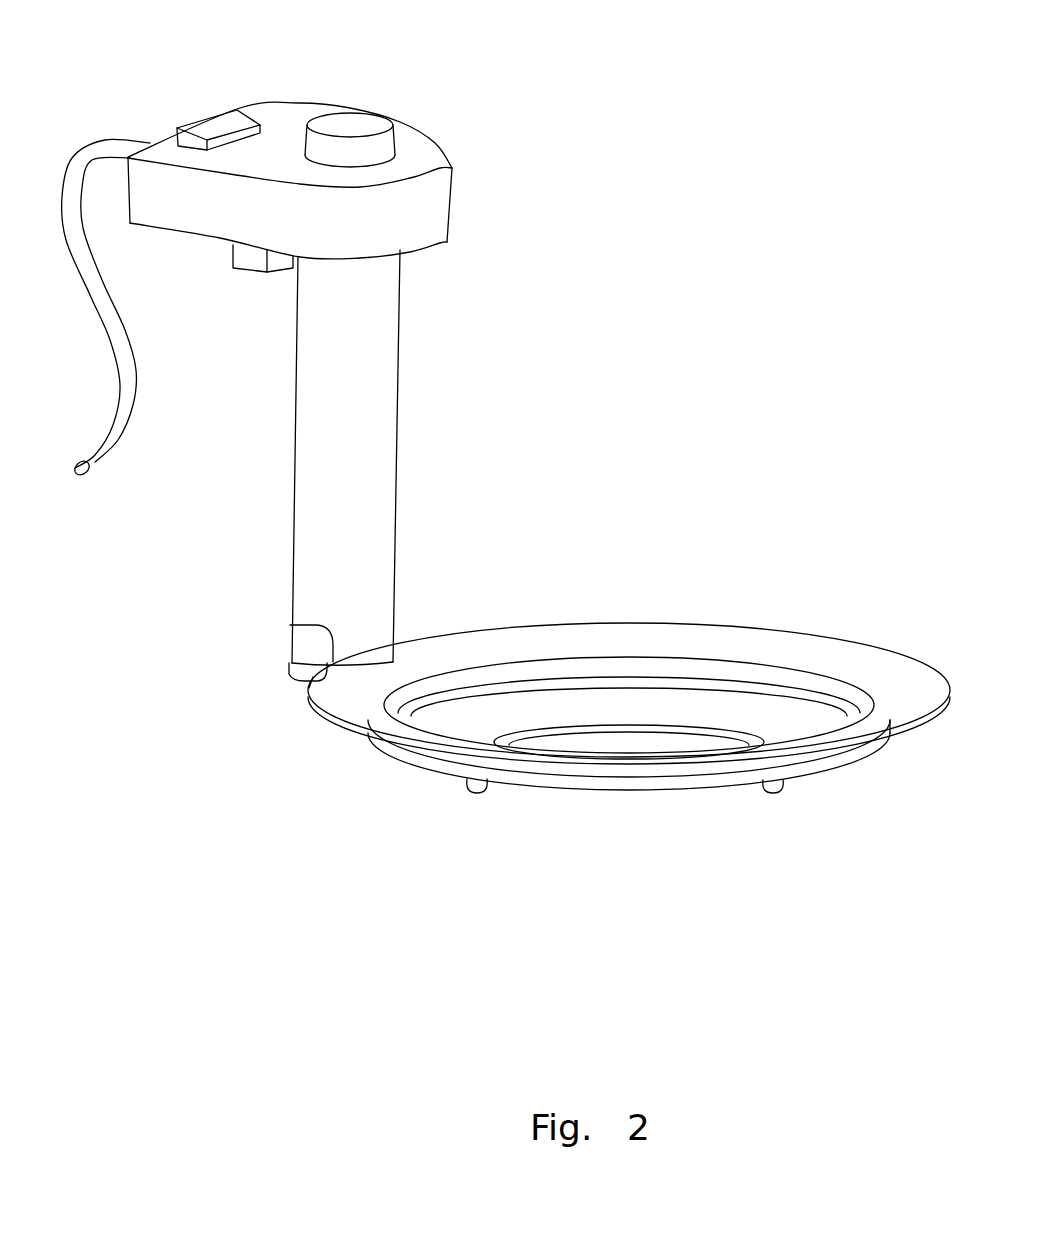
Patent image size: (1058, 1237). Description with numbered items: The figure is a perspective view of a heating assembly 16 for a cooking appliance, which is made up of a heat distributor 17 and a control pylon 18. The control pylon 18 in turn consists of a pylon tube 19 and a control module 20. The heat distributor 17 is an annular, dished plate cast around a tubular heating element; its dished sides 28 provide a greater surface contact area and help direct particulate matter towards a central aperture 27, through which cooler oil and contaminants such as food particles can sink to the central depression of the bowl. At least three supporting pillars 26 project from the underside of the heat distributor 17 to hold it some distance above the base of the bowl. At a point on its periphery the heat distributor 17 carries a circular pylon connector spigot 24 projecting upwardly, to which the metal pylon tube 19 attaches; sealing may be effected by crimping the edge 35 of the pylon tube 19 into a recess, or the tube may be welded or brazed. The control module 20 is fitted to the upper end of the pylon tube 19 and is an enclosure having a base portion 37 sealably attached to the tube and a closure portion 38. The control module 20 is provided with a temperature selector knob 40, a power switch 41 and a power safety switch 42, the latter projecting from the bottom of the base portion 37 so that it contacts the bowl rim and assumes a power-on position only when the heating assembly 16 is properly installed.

The heating assembly 16 is at (735, 125).
The heat distributor 17 is at (854, 605).
The control pylon 18 is at (528, 317).
The pylon tube 19 is at (378, 460).
The control module 20 is at (492, 74).
The pylon connector spigot 24 is at (274, 685).
The supporting pillars 26 is at (474, 792).
The central aperture 27 is at (672, 736).
The sides 28 is at (508, 647).
The edge 35 is at (290, 627).
The base portion 37 is at (428, 210).
The closure portion 38 is at (287, 127).
The temperature selector knob 40 is at (373, 126).
The power switch 41 is at (210, 128).
The power safety switch 42 is at (252, 262).